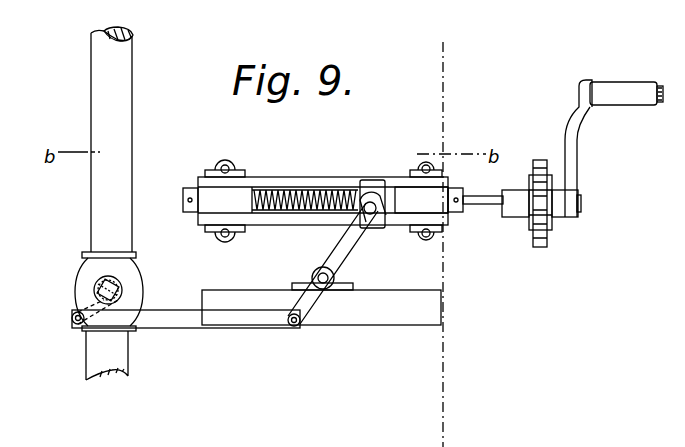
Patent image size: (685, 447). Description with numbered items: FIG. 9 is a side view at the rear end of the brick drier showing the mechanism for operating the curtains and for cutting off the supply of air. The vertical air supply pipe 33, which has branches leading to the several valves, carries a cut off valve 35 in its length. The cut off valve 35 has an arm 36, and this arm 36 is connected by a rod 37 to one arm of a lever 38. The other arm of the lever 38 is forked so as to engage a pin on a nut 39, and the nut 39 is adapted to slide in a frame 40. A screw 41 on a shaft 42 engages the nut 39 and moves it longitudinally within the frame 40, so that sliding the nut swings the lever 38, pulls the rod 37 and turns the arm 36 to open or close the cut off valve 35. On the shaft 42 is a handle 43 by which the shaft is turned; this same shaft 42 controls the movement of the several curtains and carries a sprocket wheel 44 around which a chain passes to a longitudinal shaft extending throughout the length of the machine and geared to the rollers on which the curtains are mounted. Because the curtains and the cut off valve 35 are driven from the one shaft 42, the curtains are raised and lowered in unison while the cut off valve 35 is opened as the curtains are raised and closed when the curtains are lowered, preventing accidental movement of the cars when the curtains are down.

The air supply pipe 33 is at (93, 203).
The cut off valve 35 is at (86, 283).
The arm 36 is at (72, 314).
The rod 37 is at (188, 320).
The lever 38 is at (345, 246).
The nut 39 is at (375, 183).
The frame 40 is at (323, 198).
The screw 41 is at (312, 212).
The shaft 42 is at (488, 204).
The handle 43 is at (614, 148).
The sprocket wheel 44 is at (553, 212).